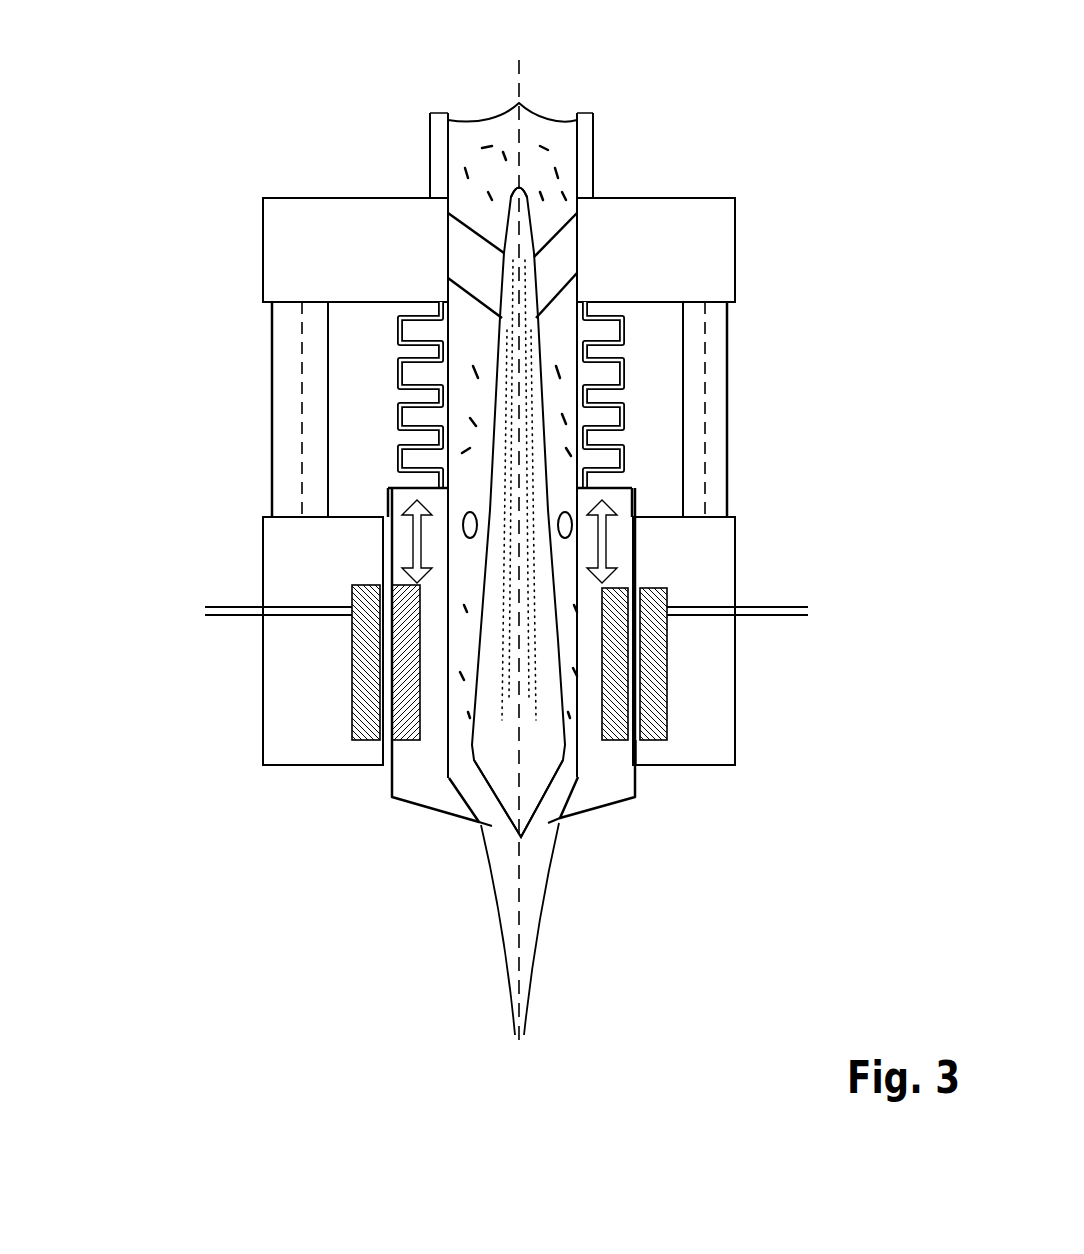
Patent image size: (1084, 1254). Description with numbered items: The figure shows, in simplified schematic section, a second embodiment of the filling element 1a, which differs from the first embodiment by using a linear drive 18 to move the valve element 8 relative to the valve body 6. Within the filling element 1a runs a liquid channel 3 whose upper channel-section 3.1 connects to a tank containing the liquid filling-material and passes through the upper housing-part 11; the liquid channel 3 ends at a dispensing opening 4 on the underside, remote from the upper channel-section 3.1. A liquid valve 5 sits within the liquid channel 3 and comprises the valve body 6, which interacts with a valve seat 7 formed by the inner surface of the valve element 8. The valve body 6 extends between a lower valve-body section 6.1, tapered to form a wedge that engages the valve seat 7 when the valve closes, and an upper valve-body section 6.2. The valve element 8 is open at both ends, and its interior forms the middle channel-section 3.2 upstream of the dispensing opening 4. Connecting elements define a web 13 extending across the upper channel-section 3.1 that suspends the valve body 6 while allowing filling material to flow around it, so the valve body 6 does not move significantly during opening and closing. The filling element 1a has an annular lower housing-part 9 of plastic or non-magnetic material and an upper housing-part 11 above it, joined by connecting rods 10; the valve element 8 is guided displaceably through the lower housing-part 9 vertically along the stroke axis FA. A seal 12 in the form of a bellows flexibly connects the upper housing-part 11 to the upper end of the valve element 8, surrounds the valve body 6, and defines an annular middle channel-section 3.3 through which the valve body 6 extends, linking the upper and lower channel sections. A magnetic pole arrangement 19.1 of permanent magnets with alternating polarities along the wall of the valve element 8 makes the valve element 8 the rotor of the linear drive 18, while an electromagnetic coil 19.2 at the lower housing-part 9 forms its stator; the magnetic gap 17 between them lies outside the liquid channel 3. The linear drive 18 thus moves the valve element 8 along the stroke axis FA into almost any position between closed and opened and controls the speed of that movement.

The filling element 1a is at (262, 120).
The liquid channel 3 is at (470, 390).
The upper channel-section 3.1 is at (472, 135).
The middle channel-section 3.2 is at (455, 567).
The annular middle channel-section 3.3 is at (556, 372).
The dispensing opening 4 is at (498, 893).
The liquid valve 5 is at (422, 761).
The valve body 6 is at (515, 457).
The lower valve-body section 6.1 is at (507, 770).
The upper valve-body section 6.2 is at (528, 195).
The valve seat 7 is at (577, 798).
The valve element 8 is at (620, 782).
The lower housing-part 9 is at (720, 580).
The connecting rods 10 is at (730, 335).
The upper housing-part 11 is at (697, 222).
The seal 12 is at (630, 340).
The web 13 is at (470, 260).
The magnetic gap 17 is at (642, 745).
The linear drive 18 is at (702, 563).
The magnetic pole arrangement 19.1 is at (403, 661).
The electromagnetic coil 19.2 is at (667, 663).
The stroke axis FA is at (545, 547).